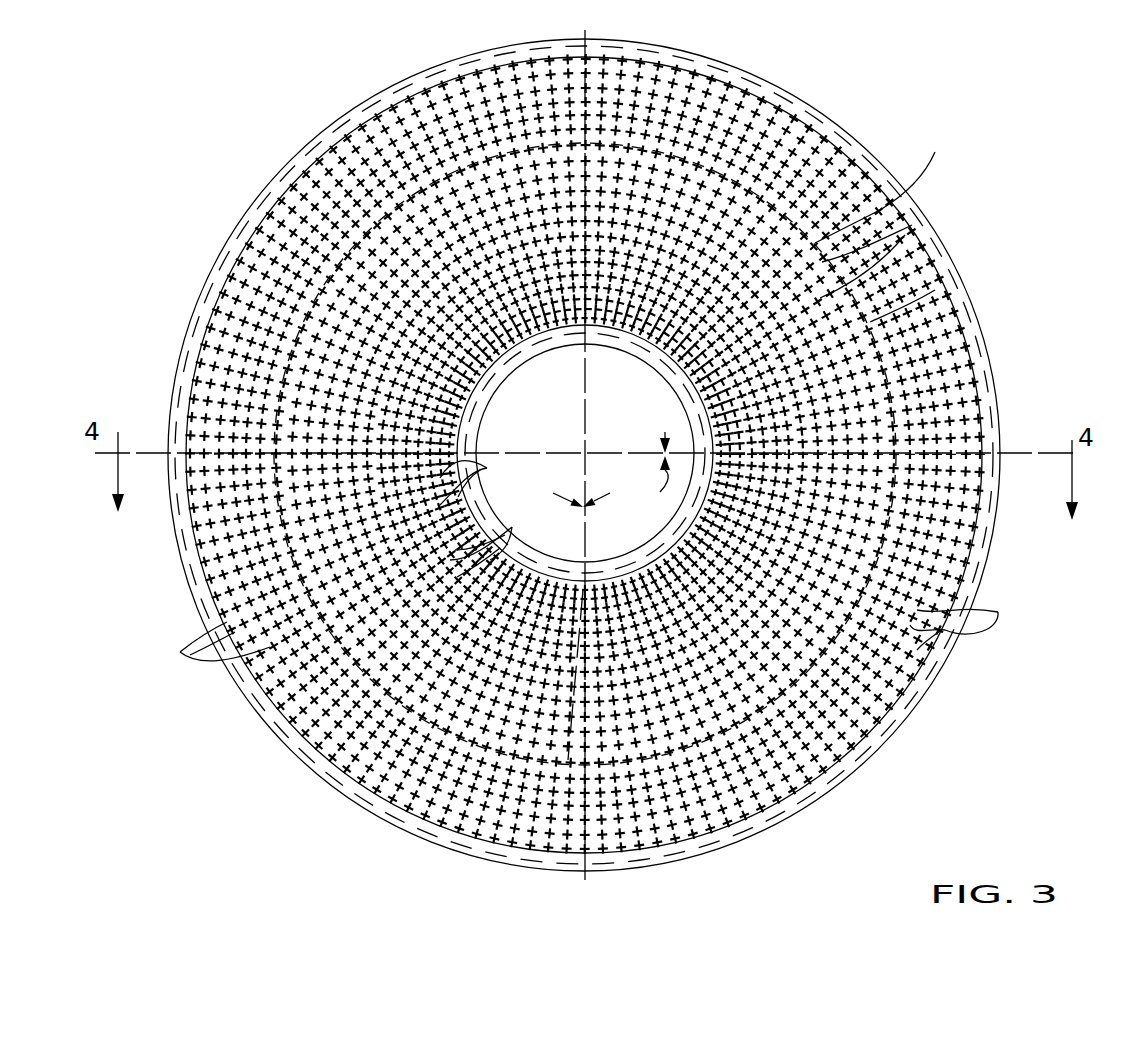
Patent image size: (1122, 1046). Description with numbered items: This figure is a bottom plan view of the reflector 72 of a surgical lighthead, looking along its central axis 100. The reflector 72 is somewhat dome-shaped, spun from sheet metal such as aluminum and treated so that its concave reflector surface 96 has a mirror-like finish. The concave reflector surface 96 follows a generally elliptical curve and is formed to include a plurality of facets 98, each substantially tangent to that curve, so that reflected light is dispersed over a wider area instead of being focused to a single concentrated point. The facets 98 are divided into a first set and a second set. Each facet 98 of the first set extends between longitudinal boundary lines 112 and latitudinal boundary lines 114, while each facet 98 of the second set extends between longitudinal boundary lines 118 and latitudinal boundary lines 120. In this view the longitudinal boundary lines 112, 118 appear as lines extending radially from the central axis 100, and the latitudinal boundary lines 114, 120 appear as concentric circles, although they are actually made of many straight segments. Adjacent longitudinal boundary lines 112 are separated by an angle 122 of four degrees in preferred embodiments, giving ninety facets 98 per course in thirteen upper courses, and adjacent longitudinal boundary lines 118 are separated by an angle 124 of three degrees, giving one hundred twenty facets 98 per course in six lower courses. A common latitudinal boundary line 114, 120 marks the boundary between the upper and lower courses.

The reflector 72 is at (786, 88).
The concave reflector surface 96 is at (815, 160).
The facets 98 is at (910, 235).
The central axis 100 is at (583, 453).
The longitudinal boundary lines 112 is at (489, 481).
The latitudinal boundary lines 114 is at (497, 538).
The longitudinal boundary lines 118 is at (983, 620).
The latitudinal boundary lines 120 is at (935, 290).
The angle 122 is at (663, 436).
The angle 124 is at (604, 494).